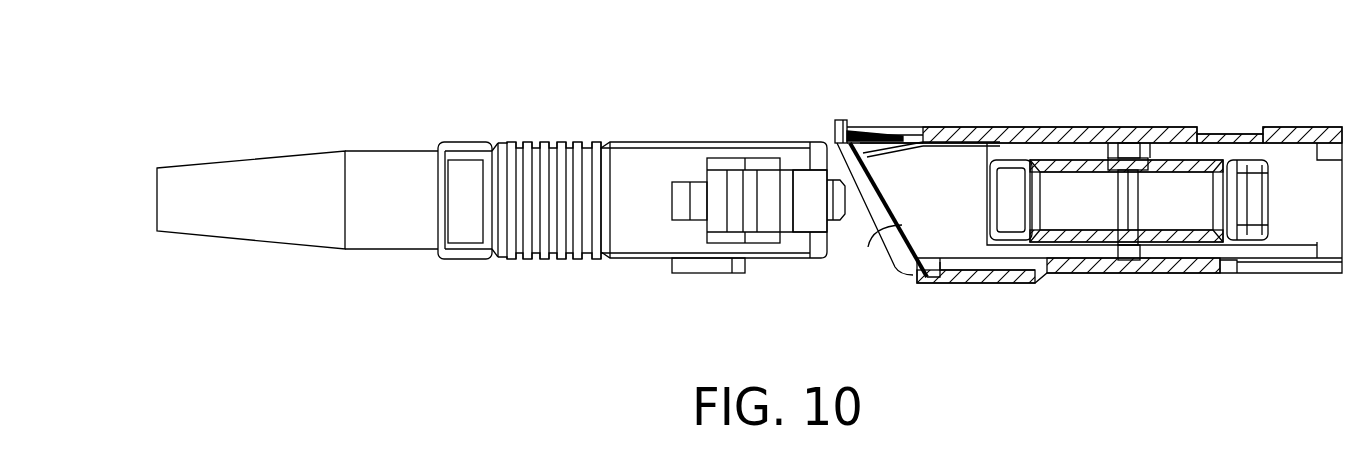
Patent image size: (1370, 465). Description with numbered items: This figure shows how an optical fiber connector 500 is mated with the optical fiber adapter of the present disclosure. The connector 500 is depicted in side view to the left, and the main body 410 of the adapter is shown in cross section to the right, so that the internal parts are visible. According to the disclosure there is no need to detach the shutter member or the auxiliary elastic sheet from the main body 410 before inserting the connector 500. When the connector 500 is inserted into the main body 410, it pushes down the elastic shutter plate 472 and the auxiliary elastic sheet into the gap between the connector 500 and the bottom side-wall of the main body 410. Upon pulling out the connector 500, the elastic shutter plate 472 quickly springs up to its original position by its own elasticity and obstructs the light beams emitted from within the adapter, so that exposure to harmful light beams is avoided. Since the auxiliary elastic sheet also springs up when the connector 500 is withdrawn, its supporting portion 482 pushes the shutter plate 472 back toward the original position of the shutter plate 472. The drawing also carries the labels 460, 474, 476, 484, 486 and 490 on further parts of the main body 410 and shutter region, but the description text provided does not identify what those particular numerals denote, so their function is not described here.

The optical fiber connector 500 is at (627, 120).
The main body 410 is at (1305, 117).
The ferrule sleeve holder 460 is at (1097, 148).
The elastic shutter plate 472 is at (868, 247).
The latch arm 474 is at (900, 130).
The latch block 476 is at (862, 122).
The supporting portion 482 is at (900, 128).
The latch slot 484 is at (978, 138).
The top wall 486 is at (985, 138).
The alignment sleeve end caps 490 is at (1160, 140).